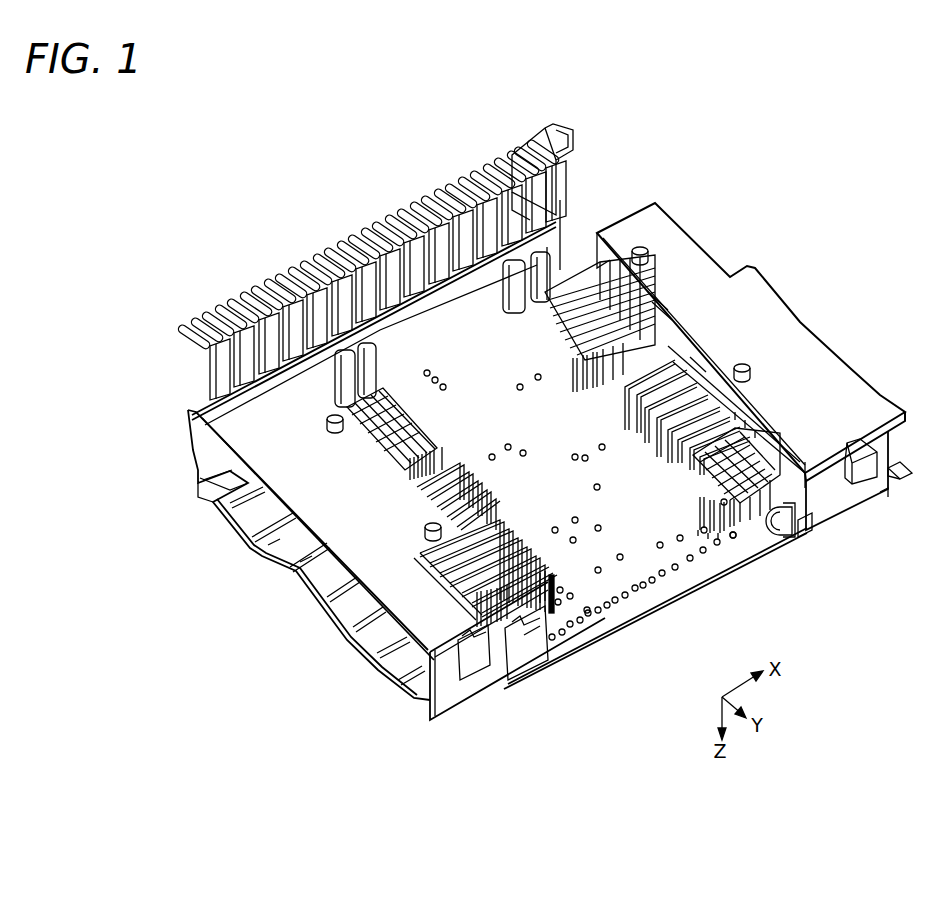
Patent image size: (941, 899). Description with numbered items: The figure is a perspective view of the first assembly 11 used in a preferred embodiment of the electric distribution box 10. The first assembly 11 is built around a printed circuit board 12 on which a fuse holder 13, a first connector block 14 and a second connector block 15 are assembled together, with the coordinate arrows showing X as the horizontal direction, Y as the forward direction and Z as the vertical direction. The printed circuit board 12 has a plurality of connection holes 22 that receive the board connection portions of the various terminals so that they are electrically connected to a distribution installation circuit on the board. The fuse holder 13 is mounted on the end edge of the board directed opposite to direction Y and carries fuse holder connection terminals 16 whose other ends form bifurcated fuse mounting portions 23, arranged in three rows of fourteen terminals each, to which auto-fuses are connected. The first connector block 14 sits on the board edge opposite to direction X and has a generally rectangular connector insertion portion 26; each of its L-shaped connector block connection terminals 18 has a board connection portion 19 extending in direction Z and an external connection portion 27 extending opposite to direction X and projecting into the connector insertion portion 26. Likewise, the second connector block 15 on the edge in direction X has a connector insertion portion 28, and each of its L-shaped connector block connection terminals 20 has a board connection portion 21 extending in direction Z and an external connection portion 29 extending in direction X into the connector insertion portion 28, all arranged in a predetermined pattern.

The electric distribution box 10 is at (638, 167).
The first assembly 11 is at (694, 230).
The printed circuit board 12 is at (686, 508).
The fuse holder 13 is at (188, 412).
The first connector block 14 is at (446, 702).
The second connector block 15 is at (850, 498).
The fuse holder connection terminal 16 is at (513, 183).
The connector block connection terminal 18 is at (556, 579).
The board connection portion 19 is at (560, 606).
The connector block connection terminal 20 is at (688, 478).
The board connection portion 21 is at (686, 508).
The connection hole 22 is at (552, 632).
The fuse mounting portion 23 is at (490, 158).
The connector insertion portion 26 is at (371, 636).
The external connection portion 27 is at (530, 562).
The connector insertion portion 28 is at (904, 481).
The external connection portion 29 is at (763, 427).